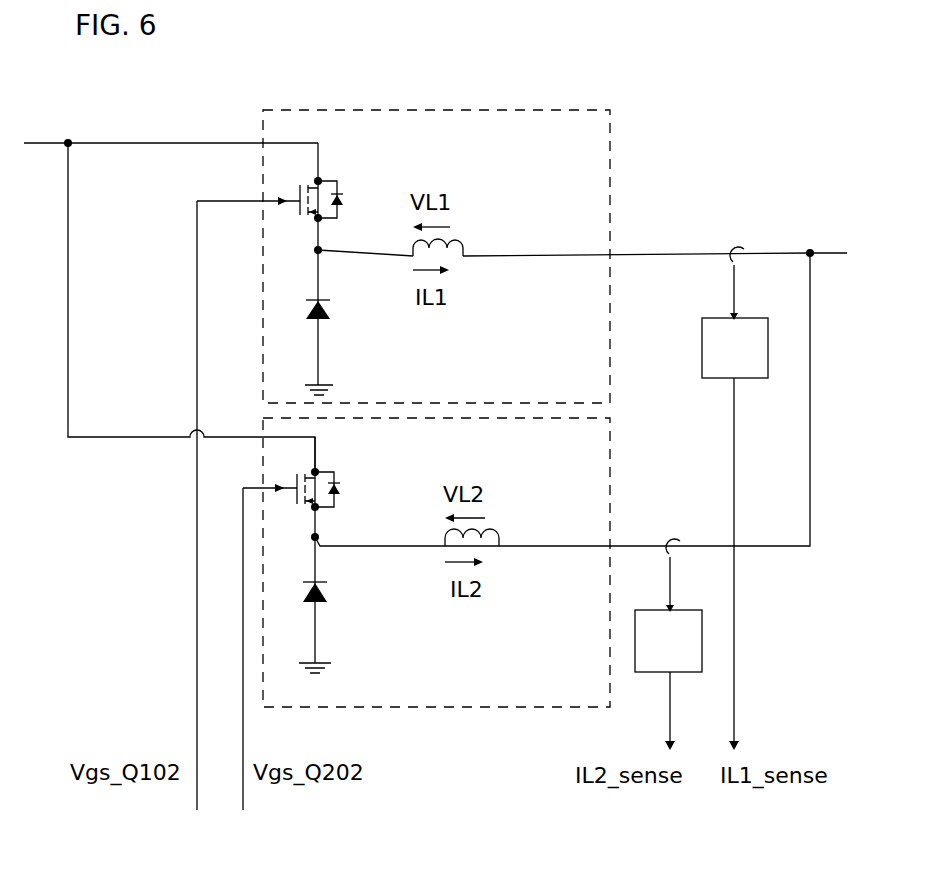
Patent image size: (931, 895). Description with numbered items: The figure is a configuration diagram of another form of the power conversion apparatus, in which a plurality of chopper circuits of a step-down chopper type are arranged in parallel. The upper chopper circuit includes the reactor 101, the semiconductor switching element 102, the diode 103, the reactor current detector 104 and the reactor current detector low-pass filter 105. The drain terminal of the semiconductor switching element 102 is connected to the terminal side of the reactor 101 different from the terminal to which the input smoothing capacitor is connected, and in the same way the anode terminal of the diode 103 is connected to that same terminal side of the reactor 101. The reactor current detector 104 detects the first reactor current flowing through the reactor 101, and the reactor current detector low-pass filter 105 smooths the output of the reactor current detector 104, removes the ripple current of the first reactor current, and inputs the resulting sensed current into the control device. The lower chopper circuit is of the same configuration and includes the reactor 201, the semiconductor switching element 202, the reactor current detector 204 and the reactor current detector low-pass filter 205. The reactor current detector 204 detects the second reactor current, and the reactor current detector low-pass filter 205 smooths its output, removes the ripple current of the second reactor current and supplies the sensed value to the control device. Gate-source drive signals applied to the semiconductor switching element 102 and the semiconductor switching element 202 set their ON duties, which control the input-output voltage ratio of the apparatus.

The reactor 101 is at (462, 234).
The semiconductor switching element 102 is at (331, 173).
The diode 103 is at (323, 320).
The reactor current detector 104 is at (734, 246).
The reactor current detector low-pass filter 105 is at (702, 339).
The reactor 201 is at (499, 524).
The semiconductor switching element 202 is at (334, 470).
The reactor current detector 204 is at (694, 527).
The reactor current detector low-pass filter 205 is at (702, 641).